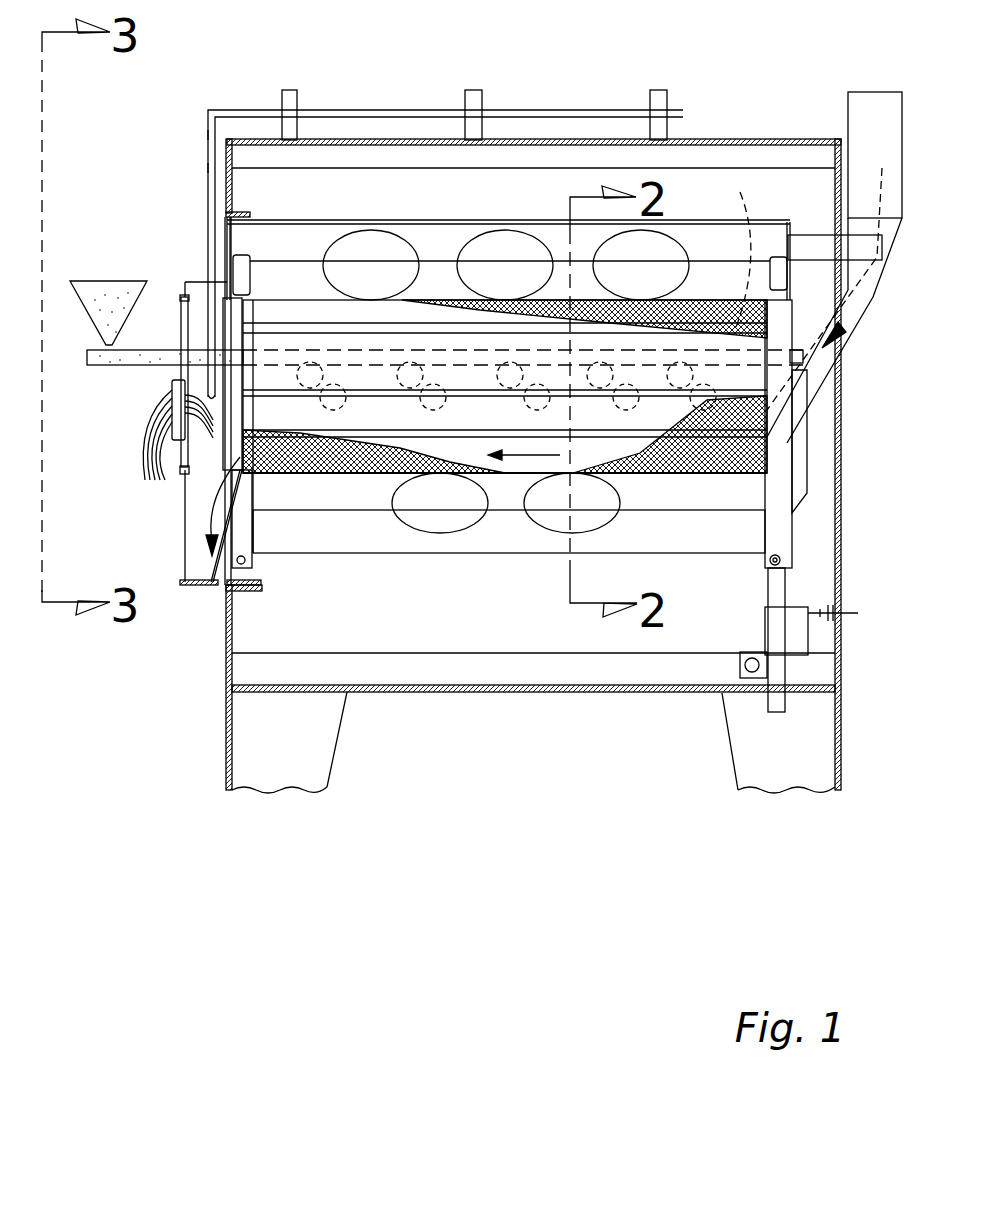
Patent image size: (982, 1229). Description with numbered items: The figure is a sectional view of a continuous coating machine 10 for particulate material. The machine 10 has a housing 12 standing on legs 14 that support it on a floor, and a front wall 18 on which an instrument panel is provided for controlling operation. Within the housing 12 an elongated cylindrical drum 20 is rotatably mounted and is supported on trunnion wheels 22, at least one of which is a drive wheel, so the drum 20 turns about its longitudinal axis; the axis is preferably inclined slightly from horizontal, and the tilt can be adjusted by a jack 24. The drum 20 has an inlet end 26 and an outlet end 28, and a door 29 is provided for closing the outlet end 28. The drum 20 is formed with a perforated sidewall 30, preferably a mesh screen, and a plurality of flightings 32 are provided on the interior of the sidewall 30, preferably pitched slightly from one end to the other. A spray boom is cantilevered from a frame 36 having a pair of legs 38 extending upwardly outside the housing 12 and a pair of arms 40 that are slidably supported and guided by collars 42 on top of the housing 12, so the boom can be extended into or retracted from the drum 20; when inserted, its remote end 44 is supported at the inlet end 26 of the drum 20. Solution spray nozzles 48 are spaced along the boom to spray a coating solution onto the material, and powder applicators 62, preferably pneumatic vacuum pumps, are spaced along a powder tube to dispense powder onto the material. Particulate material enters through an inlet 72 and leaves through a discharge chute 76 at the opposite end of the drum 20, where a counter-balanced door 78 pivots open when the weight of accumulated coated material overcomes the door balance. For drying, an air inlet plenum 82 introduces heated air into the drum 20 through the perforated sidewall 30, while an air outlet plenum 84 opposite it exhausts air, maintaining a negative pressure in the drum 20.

The continuous coating machine 10 is at (440, 131).
The housing 12 is at (357, 135).
The legs 14 is at (310, 745).
The front wall 18 is at (227, 210).
The cylindrical drum 20 is at (300, 290).
The trunnion wheels 22 is at (800, 297).
The jack 24 is at (797, 610).
The inlet end 26 is at (793, 445).
The outlet end 28 is at (200, 330).
The door 29 is at (175, 328).
The perforated sidewall 30 is at (330, 480).
The flightings 32 is at (443, 327).
The frame 36 is at (208, 168).
The legs 38 is at (208, 135).
The arms 40 is at (235, 110).
The collars 42 is at (283, 92).
The remote end 44 is at (740, 191).
The solution spray nozzles 48 is at (425, 405).
The powder applicators 62 is at (403, 362).
The inlet 72 is at (850, 105).
The discharge chute 76 is at (185, 565).
The door 78 is at (212, 592).
The air inlet plenum 82 is at (353, 233).
The air outlet plenum 84 is at (553, 528).